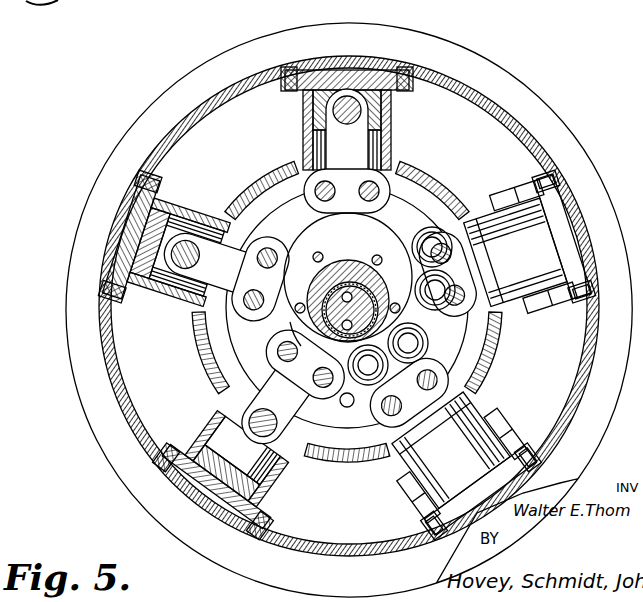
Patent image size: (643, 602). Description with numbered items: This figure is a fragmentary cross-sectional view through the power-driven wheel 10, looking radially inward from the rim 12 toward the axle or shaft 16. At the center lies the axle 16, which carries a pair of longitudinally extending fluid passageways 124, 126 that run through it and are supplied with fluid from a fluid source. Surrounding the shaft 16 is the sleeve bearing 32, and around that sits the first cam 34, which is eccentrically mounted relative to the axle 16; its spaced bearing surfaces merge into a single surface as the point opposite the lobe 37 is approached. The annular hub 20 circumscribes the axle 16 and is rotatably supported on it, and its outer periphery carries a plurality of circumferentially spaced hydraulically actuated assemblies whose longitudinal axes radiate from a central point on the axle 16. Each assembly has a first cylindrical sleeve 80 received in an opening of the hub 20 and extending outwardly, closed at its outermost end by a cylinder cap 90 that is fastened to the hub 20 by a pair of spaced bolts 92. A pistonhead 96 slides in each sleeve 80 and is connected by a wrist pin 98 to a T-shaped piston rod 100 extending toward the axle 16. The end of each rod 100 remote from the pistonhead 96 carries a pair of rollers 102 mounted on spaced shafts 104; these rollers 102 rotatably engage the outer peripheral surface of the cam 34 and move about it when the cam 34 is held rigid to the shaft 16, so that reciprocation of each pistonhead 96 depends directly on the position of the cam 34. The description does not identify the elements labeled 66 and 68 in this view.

The power-driven wheel 10 is at (586, 155).
The rim 12 is at (514, 91).
The axle or shaft 16 is at (320, 283).
The annular hub 20 is at (281, 185).
The sleeve bearing 32 is at (376, 289).
The first cam 34 is at (388, 233).
The lobe 37 is at (348, 235).
The ring segment 66 is at (470, 206).
The pin 68 is at (318, 252).
The first cylindrical sleeve 80 is at (396, 115).
The cylinder cap 90 is at (296, 89).
The spaced bolts 92 is at (518, 204).
The pistonhead 96 is at (315, 113).
The wrist pin 98 is at (263, 270).
The T-shaped piston rod 100 is at (382, 157).
The rollers 102 is at (312, 223).
The spaced shafts 104 is at (330, 190).
The fluid passageway 124 is at (350, 284).
The fluid passageway 126 is at (290, 322).